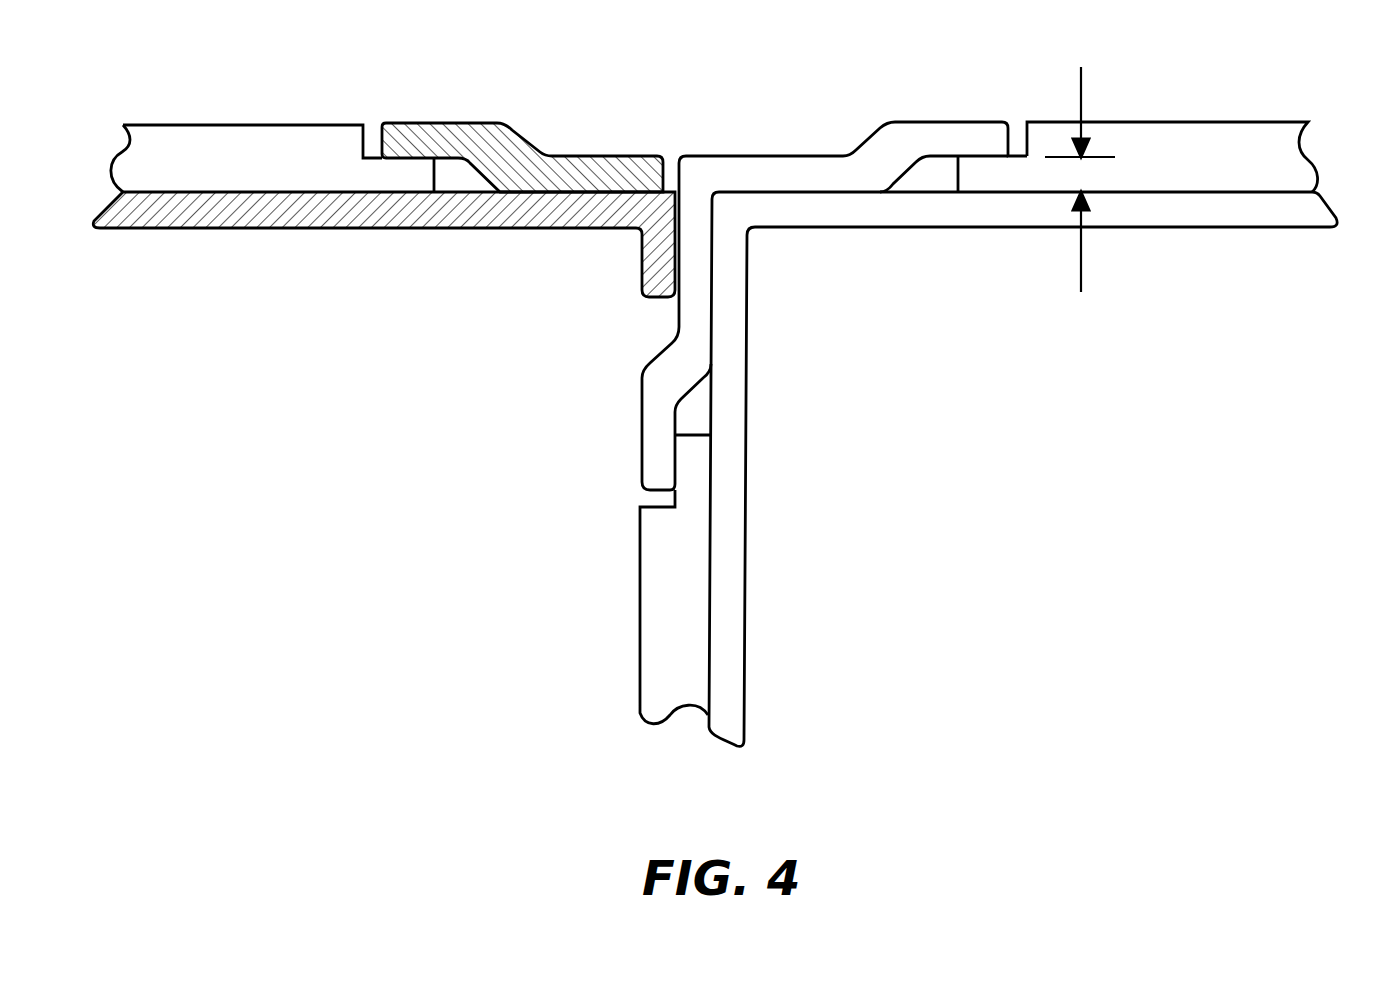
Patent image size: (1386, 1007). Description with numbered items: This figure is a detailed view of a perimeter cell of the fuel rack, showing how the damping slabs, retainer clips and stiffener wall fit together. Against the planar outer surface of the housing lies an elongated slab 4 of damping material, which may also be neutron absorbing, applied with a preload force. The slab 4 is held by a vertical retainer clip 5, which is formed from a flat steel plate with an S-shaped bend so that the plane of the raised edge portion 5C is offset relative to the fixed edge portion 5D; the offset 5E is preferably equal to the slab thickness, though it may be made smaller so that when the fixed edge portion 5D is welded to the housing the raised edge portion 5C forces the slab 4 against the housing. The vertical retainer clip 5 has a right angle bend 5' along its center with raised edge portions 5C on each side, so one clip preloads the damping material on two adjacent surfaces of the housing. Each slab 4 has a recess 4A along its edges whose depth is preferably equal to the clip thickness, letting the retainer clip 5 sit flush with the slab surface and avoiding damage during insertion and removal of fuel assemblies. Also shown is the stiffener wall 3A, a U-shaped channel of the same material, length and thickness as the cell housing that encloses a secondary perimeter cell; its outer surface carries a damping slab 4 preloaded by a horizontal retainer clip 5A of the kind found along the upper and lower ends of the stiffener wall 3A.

The stiffener wall 3A is at (553, 213).
The elongated slab 4 is at (190, 160).
The recess 4A is at (373, 140).
The vertical retainer clip 5 is at (1023, 398).
The right angle bend 5' is at (853, 188).
The horizontal retainer clip 5A is at (495, 160).
The raised edge portion 5C is at (941, 137).
The fixed edge portion 5D is at (802, 173).
The offset 5E is at (1080, 199).